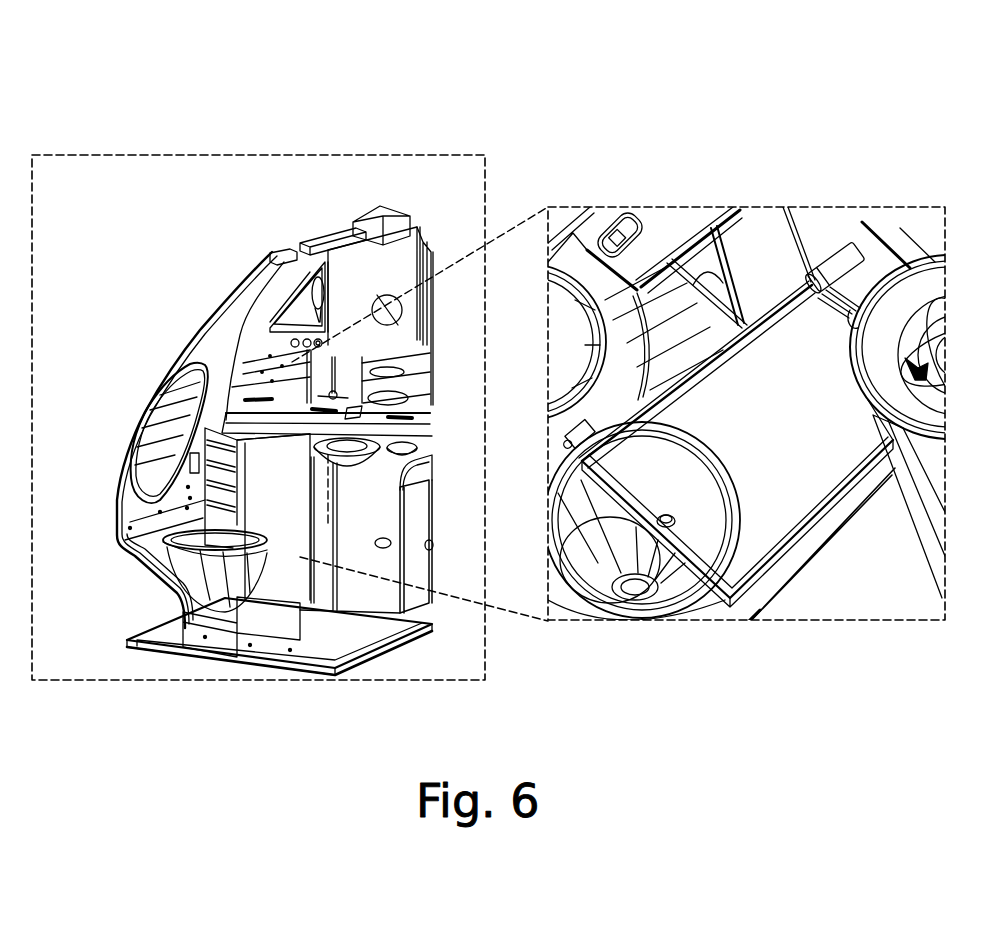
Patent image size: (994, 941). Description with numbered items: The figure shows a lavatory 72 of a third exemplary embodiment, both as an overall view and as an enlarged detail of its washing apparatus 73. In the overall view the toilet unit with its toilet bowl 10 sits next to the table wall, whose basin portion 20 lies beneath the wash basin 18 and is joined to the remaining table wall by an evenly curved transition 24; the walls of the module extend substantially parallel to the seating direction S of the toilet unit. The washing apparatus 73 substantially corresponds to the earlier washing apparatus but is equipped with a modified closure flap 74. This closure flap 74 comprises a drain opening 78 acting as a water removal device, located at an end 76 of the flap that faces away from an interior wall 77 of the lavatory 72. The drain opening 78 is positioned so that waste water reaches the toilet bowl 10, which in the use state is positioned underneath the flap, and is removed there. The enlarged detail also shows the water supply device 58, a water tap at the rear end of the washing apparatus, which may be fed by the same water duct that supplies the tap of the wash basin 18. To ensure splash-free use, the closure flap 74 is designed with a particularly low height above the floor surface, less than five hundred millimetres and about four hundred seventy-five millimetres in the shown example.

The lavatory 72 is at (275, 417).
The washing apparatus 73 is at (256, 402).
The wash basin 18 is at (348, 445).
The closure flap 74 is at (290, 503).
The toilet bowl 10 is at (228, 600).
The interior wall 77 is at (288, 565).
The seating direction S is at (298, 532).
The transition 24 is at (330, 606).
The basin portion 20 is at (388, 585).
The water supply device 58 is at (843, 262).
The drain opening 78 is at (680, 510).
The end 76 is at (750, 612).